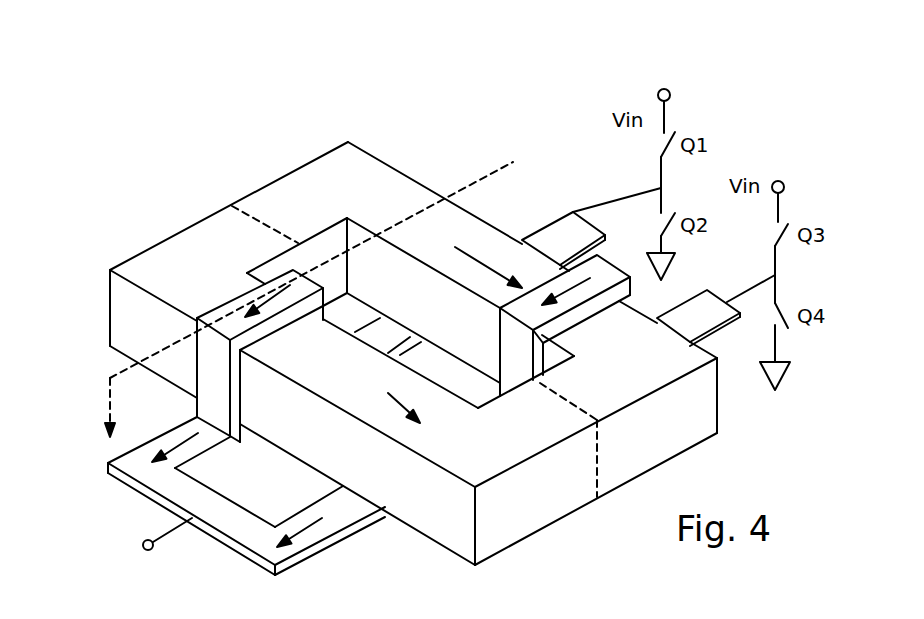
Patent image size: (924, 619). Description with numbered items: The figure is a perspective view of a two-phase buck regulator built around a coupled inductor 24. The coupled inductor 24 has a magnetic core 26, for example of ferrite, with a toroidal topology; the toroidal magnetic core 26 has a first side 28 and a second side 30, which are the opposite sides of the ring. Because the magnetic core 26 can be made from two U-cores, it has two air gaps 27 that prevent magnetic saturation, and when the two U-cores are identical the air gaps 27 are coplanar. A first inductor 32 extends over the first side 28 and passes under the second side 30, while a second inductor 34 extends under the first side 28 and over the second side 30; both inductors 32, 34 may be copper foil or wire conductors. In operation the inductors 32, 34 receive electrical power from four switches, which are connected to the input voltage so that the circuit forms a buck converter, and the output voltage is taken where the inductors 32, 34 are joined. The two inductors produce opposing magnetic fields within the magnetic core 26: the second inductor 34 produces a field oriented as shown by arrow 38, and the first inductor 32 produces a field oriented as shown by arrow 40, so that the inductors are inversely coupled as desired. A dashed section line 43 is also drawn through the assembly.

The coupled inductor 24 is at (252, 110).
The magnetic core 26 is at (195, 222).
The air gaps 27 is at (263, 222).
The first side 28 is at (460, 300).
The second side 30 is at (413, 417).
The first inductor 32 is at (572, 298).
The second inductor 34 is at (236, 300).
The arrow 38 is at (548, 356).
The arrow 40 is at (458, 247).
The winding axis / section line 43 is at (469, 185).